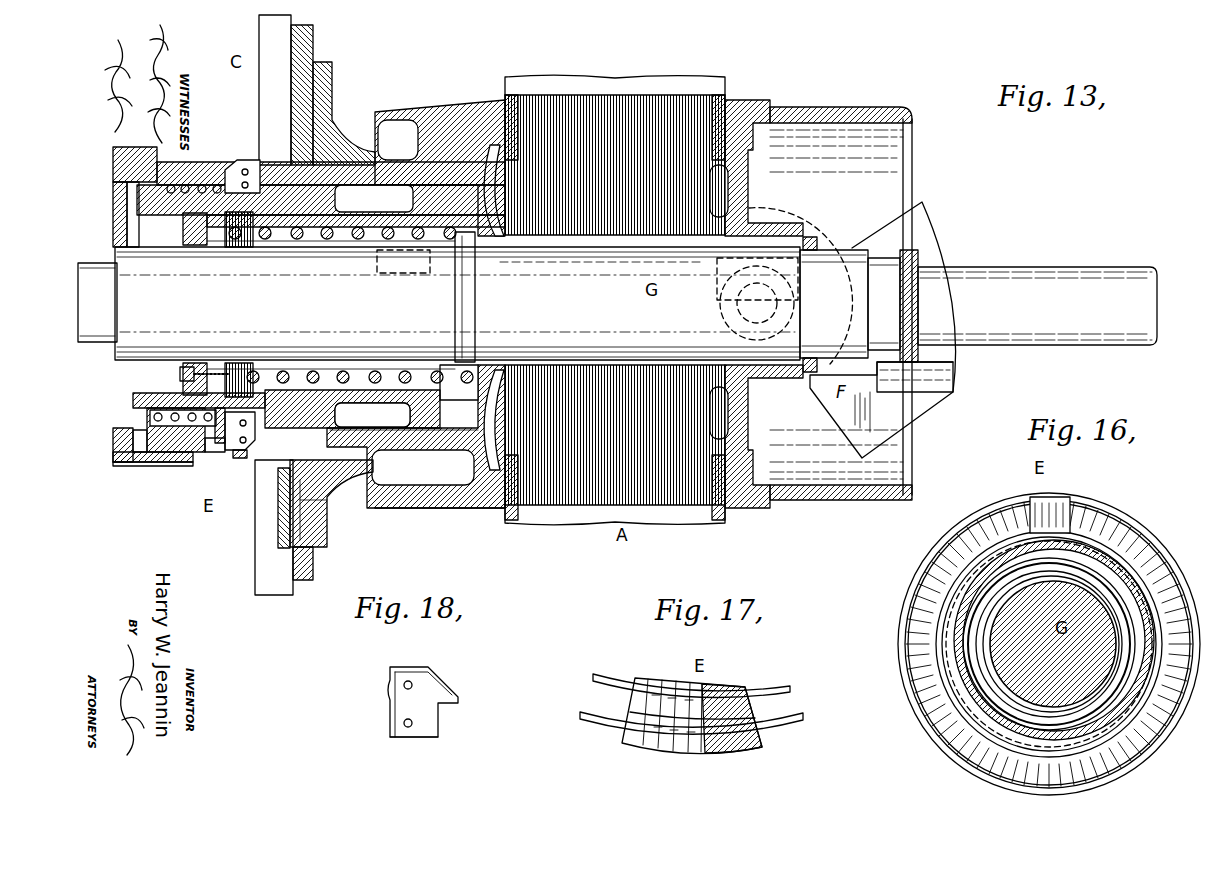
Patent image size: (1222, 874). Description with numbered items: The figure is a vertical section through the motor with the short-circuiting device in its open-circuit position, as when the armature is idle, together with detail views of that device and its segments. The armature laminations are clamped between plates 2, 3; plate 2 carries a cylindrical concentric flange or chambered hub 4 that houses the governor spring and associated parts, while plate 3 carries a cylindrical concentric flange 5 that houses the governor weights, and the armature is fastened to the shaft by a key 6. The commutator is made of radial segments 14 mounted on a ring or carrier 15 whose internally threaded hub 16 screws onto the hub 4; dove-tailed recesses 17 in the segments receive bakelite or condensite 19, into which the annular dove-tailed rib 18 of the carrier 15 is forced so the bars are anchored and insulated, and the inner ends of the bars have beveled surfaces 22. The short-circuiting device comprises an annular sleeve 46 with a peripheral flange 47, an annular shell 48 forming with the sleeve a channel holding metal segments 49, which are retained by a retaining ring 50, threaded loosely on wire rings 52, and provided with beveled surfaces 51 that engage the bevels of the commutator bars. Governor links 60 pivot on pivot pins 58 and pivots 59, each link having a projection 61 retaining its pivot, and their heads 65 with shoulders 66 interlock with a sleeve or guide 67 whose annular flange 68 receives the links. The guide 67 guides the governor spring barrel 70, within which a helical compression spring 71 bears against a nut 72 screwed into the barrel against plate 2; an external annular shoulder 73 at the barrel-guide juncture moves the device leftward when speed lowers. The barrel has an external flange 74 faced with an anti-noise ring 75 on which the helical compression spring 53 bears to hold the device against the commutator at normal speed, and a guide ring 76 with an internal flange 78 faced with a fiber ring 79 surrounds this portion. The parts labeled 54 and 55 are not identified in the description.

In FIG. 13, the plate 2 is at (741, 102).
In FIG. 13, the plate 3 is at (480, 104).
In FIG. 13, the cylindrical concentric flange or chambered hub 4 is at (420, 447).
In FIG. 13, the cylindrical concentric flange 5 is at (826, 115).
In FIG. 13, the key 6 is at (614, 248).
In FIG. 13, the commutator segments 14 is at (275, 585).
In FIG. 13, the ring or carrier 15 is at (318, 509).
In FIG. 13, the internally threaded hub 16 is at (328, 484).
In FIG. 13, the dove-tailed recesses 17 is at (278, 521).
In FIG. 13, the annular dove-tailed rib 18 is at (316, 521).
In FIG. 13, the plastic insulating material 19 is at (313, 570).
In FIG. 13, the beveled surfaces 22 is at (300, 158).
In FIG. 13, the annular carrier or sleeve 46 is at (220, 415).
In FIG. 16, the annular carrier or sleeve 46 is at (1180, 600).
In FIG. 13, the peripheral flange 47 is at (222, 445).
In FIG. 13, the annular shell 48 is at (240, 458).
In FIG. 16, the annular shell 48 is at (1176, 560).
In FIG. 16, the short-circuiting segments 49 is at (1170, 732).
In FIG. 17, the short-circuiting segments 49 is at (760, 702).
In FIG. 18, the short-circuiting segments 49 is at (398, 733).
In FIG. 16, the retaining ring 50 is at (1163, 640).
In FIG. 18, the beveled surfaces 51 is at (438, 688).
In FIG. 17, the wire rings 52 is at (764, 688).
In FIG. 13, the helical compression spring 53 is at (205, 186).
In FIG. 13, the coupling flange 54 is at (915, 410).
In FIG. 13, the gear 55 is at (805, 226).
In FIG. 13, the pivot pins 58 is at (803, 297).
In FIG. 13, the pivots 59 is at (762, 232).
In FIG. 13, the links 60 is at (560, 265).
In FIG. 13, the projection 61 is at (717, 285).
In FIG. 13, the heads 65 is at (403, 274).
In FIG. 13, the shoulders 66 is at (460, 245).
In FIG. 13, the sleeve or guide 67 is at (372, 415).
In FIG. 13, the annular flange 68 is at (459, 388).
In FIG. 13, the governor spring barrel 70 is at (262, 380).
In FIG. 16, the governor spring barrel 70 is at (1140, 545).
In FIG. 13, the helical compression spring 71 is at (375, 370).
In FIG. 16, the helical compression spring 71 is at (1080, 585).
In FIG. 13, the nut 72 is at (183, 369).
In FIG. 13, the external annular shoulder 73 is at (300, 388).
In FIG. 13, the external flange 74 is at (140, 460).
In FIG. 13, the anti-noise ring 75 is at (160, 460).
In FIG. 13, the ring 76 is at (118, 466).
In FIG. 13, the internal flange 78 is at (113, 440).
In FIG. 13, the fiber ring 79 is at (125, 428).